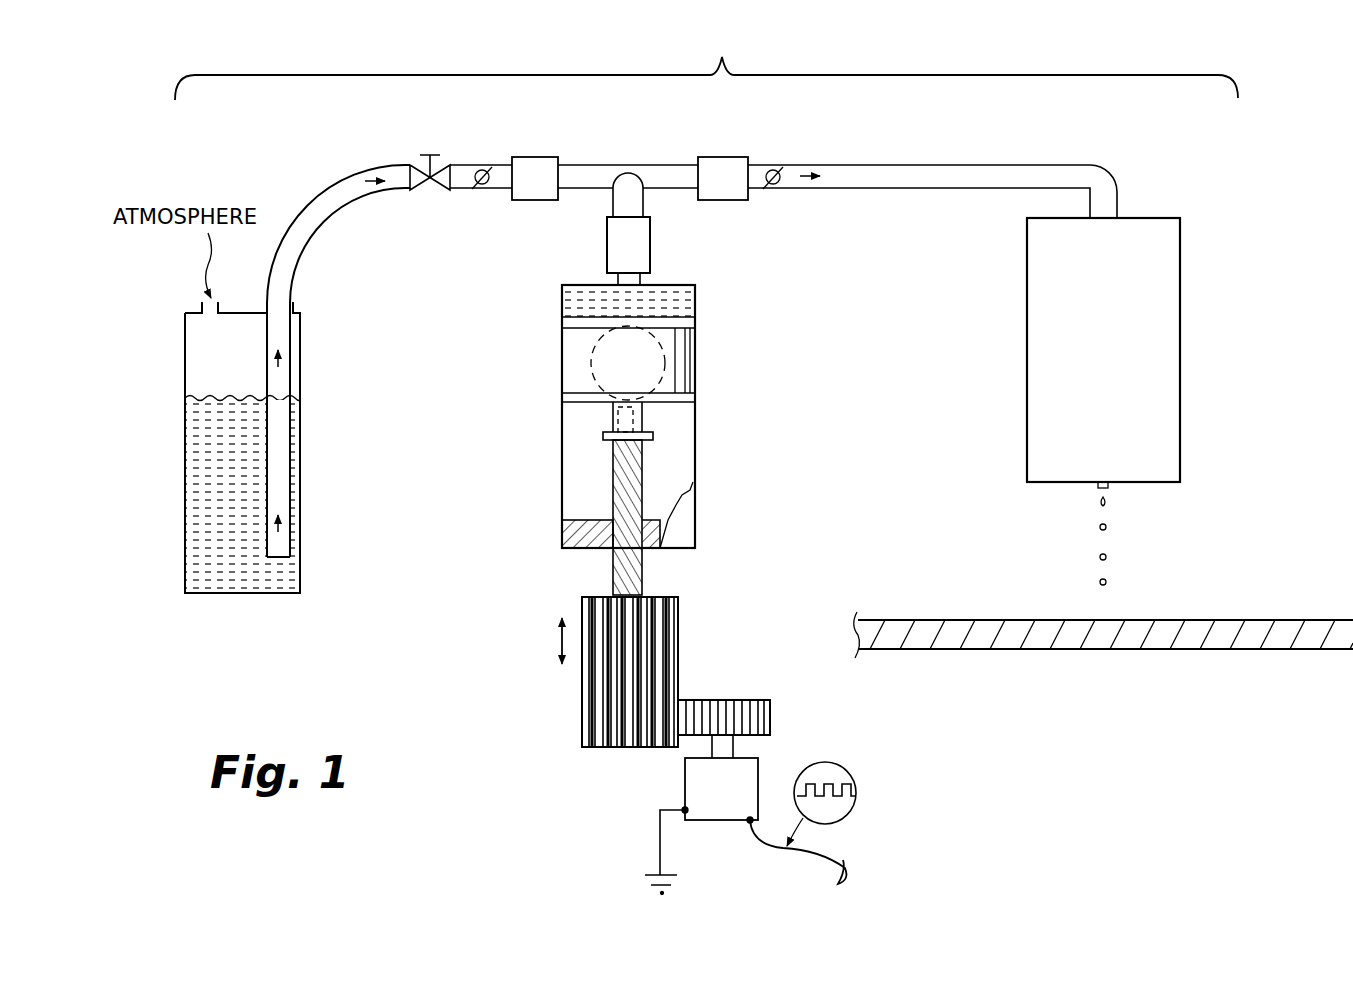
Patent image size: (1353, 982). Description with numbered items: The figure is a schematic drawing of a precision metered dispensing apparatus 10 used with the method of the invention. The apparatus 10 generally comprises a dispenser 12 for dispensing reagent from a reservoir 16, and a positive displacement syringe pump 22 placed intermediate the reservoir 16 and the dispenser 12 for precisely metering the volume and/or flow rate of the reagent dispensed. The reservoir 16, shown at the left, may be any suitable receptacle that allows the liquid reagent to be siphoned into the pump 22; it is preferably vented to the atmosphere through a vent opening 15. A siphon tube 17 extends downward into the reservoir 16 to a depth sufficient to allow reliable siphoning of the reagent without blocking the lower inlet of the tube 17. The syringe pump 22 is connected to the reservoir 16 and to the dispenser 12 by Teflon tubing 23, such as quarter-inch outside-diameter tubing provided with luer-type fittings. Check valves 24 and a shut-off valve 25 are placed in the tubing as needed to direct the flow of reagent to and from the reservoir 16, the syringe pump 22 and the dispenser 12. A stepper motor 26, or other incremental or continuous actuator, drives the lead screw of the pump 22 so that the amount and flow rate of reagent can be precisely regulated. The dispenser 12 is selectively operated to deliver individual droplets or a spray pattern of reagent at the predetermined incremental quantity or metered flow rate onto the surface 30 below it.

The precision metered dispensing apparatus 10 is at (706, 64).
The dispenser 12 is at (1116, 325).
The vent opening 15 is at (205, 299).
The reservoir 16 is at (173, 438).
The siphon tube 17 is at (288, 378).
The positive displacement syringe pump 22 is at (548, 447).
The Teflon tubing 23 is at (918, 165).
The check valve 24 is at (487, 183).
The shut-off valve 25 is at (418, 166).
The stepper motor 26 is at (704, 796).
The substrate 30 is at (1310, 620).